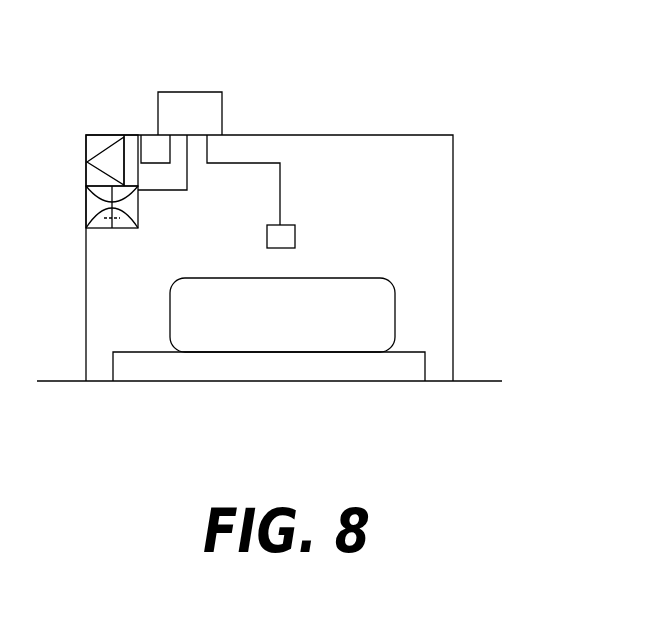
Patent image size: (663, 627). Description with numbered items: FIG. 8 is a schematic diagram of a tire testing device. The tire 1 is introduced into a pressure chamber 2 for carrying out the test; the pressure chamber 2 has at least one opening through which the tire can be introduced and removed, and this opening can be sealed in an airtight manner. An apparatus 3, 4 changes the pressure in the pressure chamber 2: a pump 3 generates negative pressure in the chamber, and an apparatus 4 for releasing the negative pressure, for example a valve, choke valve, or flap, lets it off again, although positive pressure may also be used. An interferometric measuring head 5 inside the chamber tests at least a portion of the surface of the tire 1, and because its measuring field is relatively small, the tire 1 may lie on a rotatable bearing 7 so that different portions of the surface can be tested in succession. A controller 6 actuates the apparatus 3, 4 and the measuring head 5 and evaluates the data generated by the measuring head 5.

The tire 1 is at (230, 317).
The pressure chamber 2 is at (455, 224).
The pump 3 is at (92, 150).
The apparatus for releasing the negative pressure 4 is at (92, 228).
The interferometric measuring head 5 is at (286, 237).
The controller 6 is at (213, 112).
The rotatable bearing 7 is at (158, 370).